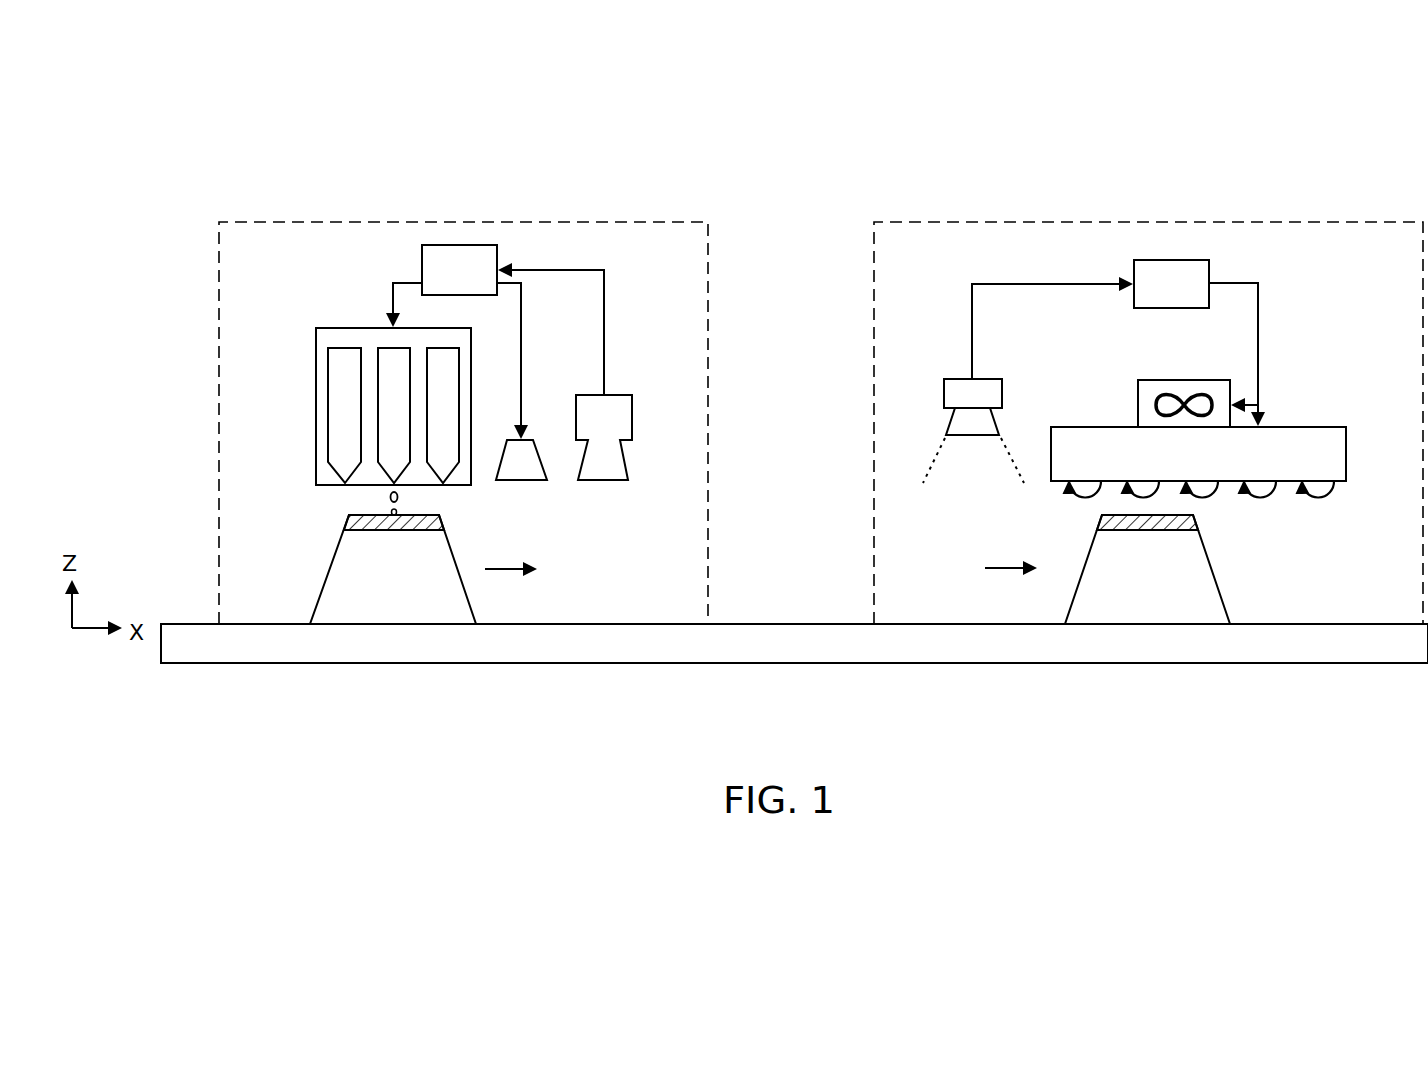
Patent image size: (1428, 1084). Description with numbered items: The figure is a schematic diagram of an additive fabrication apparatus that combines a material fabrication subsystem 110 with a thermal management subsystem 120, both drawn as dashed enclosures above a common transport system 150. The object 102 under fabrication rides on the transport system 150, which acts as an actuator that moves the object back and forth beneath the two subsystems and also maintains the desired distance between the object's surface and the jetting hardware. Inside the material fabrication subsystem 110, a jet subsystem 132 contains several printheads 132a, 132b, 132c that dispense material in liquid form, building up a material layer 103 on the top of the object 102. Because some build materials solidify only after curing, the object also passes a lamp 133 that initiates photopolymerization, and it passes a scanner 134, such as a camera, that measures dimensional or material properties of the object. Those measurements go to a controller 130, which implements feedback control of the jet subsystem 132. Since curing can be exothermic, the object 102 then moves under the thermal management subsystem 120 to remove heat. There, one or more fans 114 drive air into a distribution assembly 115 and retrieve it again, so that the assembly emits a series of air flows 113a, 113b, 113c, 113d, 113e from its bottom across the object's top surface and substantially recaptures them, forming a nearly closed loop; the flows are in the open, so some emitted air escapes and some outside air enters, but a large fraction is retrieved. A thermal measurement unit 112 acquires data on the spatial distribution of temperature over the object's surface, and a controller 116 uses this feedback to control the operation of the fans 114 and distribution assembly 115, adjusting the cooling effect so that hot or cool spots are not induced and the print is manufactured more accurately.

The object 102 is at (770, 569).
The material layer 103 is at (467, 512).
The material fabrication subsystem 110 is at (618, 221).
The thermal measurement unit 112 is at (973, 431).
The air flow 113a is at (1330, 498).
The air flow 113b is at (1263, 503).
The air flow 113c is at (1217, 493).
The air flow 113d is at (1143, 489).
The air flow 113e is at (1087, 505).
The fan 114 is at (1183, 378).
The distribution assembly 115 is at (1198, 454).
The controller 116 is at (1171, 284).
The thermal management subsystem 120 is at (918, 221).
The controller 130 is at (459, 270).
The jet subsystem 132 is at (378, 391).
The printhead 132a is at (329, 397).
The printhead 132b is at (377, 435).
The printhead 132c is at (460, 357).
The lamp 133 is at (540, 452).
The scanner 134 is at (615, 395).
The transport system 150 is at (794, 643).